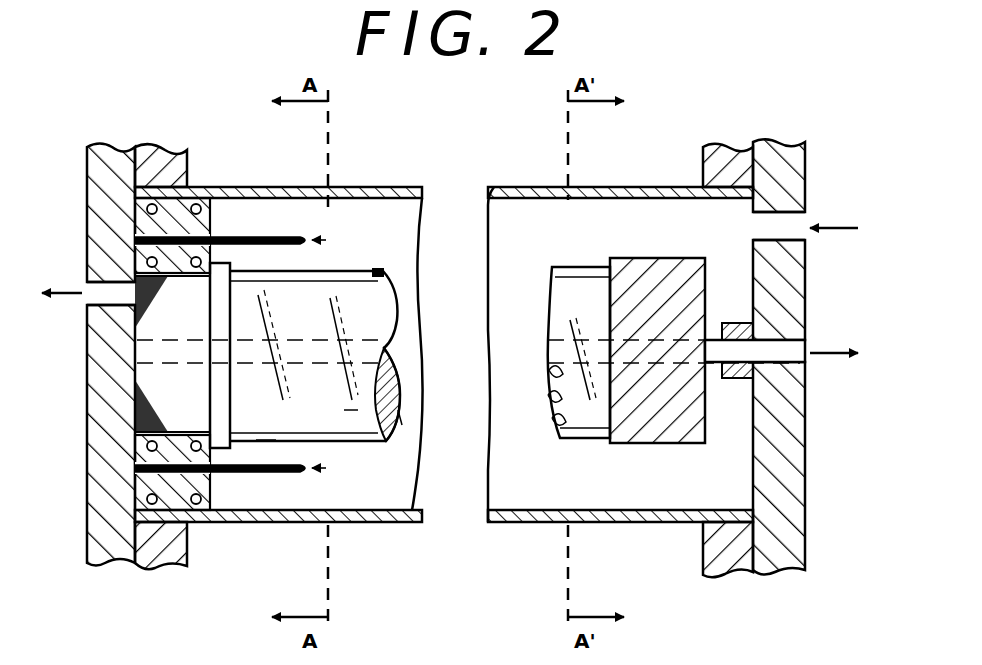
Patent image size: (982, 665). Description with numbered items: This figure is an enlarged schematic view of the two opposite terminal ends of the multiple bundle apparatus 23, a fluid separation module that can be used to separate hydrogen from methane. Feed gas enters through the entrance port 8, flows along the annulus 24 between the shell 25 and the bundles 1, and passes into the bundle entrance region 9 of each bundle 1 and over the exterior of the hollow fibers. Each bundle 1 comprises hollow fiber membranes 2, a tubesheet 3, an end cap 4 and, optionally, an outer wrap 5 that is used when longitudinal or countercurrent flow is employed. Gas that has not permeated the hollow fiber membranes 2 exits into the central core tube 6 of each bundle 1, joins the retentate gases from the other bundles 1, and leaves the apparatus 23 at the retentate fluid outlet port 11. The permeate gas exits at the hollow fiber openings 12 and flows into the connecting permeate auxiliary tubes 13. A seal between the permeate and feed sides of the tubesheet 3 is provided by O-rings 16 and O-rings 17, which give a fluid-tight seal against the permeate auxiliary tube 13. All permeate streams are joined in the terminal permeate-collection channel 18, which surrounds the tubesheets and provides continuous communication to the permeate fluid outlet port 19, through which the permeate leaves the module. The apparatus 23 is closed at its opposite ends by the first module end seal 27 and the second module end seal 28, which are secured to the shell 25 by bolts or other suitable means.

The hollow fiber bundle 1 is at (400, 418).
The hollow fiber membranes 2 is at (345, 405).
The tubesheet 3 is at (223, 268).
The end cap 4 is at (637, 292).
The outer wrap 5 is at (347, 268).
The central core tube 6 is at (657, 343).
The entrance port 8 is at (795, 225).
The bundle entrance region 9 is at (258, 442).
The retentate fluid outlet port 11 is at (790, 358).
The hollow fiber openings 12 is at (137, 410).
The connecting permeate auxiliary tubes 13 is at (281, 236).
The O-rings 16 is at (198, 300).
The O-rings 17 is at (185, 525).
The terminal permeate-collection channel 18 is at (137, 228).
The permeate fluid outlet port 19 is at (98, 335).
The multiple bundle apparatus 23 is at (410, 184).
The annulus 24 is at (336, 488).
The shell 25 is at (290, 512).
The first module end seal 27 is at (88, 144).
The second module end seal 28 is at (779, 140).